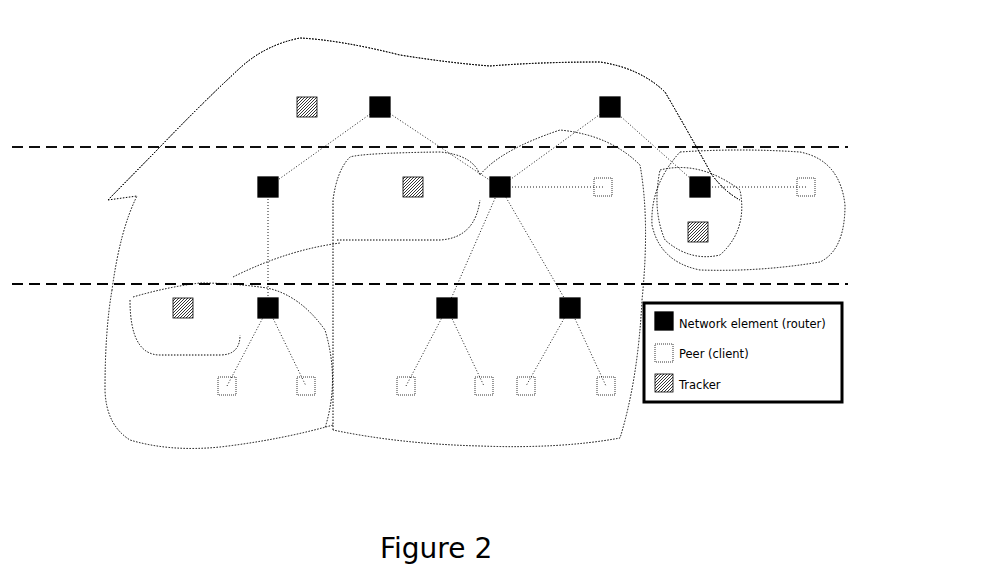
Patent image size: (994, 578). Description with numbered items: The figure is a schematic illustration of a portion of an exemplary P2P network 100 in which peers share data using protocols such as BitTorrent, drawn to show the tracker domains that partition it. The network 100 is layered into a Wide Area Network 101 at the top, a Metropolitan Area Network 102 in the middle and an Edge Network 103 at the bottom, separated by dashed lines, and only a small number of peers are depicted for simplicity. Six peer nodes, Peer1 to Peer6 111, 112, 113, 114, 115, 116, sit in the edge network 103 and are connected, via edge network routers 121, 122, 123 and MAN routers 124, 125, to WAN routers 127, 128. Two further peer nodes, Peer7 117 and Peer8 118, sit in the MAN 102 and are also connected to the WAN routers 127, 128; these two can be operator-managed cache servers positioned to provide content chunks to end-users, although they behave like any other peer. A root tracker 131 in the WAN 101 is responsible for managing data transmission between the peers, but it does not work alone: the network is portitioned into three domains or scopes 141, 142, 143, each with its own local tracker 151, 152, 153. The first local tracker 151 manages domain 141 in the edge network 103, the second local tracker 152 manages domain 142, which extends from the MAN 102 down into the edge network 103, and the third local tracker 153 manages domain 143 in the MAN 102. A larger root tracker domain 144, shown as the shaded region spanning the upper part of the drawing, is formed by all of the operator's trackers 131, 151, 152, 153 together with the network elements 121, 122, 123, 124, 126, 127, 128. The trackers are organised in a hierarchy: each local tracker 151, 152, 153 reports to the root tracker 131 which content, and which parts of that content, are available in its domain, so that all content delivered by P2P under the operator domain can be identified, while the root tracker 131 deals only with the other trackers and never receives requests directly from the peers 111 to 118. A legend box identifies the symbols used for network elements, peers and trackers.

The network 100 is at (148, 31).
The Wide Area Network (WAN) 101 is at (430, 122).
The Metropolitan Area Network (MAN) 102 is at (430, 248).
The Edge Network 103 is at (430, 349).
The peer node Peer1 111 is at (247, 385).
The peer node Peer2 112 is at (318, 387).
The peer node Peer3 113 is at (397, 385).
The peer node Peer4 114 is at (473, 387).
The peer node Peer5 115 is at (538, 385).
The peer node Peer6 116 is at (620, 387).
The peer node Peer7 117 is at (604, 176).
The peer node Peer8 118 is at (810, 176).
The edge network router 121 is at (258, 303).
The edge network router 122 is at (437, 306).
The edge network router 123 is at (582, 306).
The MAN router 124 is at (258, 190).
The MAN router 125 is at (505, 177).
The network element 126 is at (702, 177).
The WAN router 127 is at (400, 70).
The WAN router 128 is at (605, 97).
The root tracker 131 is at (297, 108).
The domain 141 is at (110, 418).
The domain 142 is at (525, 450).
The domain 143 is at (770, 150).
The root tracker domain 144 is at (490, 62).
The local tracker 151 is at (173, 308).
The local tracker 152 is at (403, 190).
The local tracker 153 is at (698, 222).